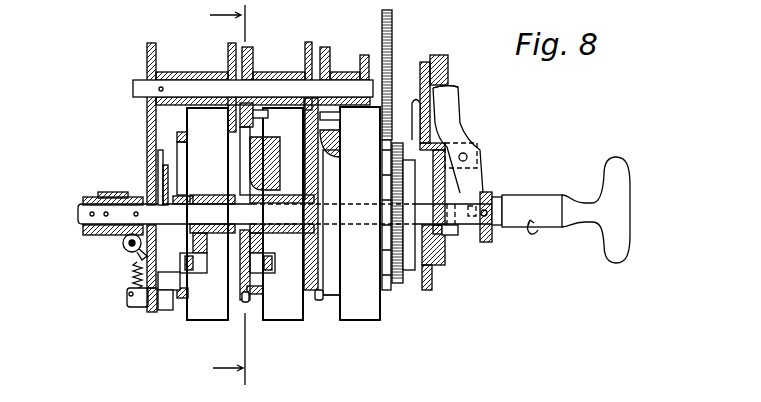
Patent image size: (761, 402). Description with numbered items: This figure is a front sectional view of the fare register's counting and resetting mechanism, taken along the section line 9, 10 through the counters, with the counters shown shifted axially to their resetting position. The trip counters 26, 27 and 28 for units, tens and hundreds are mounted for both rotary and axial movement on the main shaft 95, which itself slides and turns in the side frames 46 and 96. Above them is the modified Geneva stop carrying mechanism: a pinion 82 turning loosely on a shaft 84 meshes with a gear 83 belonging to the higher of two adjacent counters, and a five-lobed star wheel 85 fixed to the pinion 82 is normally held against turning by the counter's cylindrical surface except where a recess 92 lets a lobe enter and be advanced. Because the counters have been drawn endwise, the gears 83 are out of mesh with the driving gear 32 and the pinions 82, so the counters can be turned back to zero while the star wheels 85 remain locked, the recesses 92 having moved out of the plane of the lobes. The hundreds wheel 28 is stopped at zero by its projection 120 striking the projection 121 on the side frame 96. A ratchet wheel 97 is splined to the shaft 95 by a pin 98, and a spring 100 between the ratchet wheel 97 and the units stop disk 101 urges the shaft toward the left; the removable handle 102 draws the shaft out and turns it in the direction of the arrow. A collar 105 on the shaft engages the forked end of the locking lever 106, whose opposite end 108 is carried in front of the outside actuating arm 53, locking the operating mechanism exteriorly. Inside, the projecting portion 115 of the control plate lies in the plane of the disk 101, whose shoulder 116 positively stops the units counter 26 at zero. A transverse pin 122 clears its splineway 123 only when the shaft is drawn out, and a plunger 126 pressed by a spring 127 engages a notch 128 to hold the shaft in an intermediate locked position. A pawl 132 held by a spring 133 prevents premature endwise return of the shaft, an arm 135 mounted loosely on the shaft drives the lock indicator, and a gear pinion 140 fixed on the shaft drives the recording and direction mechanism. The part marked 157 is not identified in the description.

The section line 9 is at (233, 23).
The section line 10 is at (240, 349).
The units counter 26 is at (358, 321).
The tens counter 27 is at (297, 321).
The hundreds wheel 28 is at (206, 321).
The driving gear 32 is at (393, 27).
The side frame 46 is at (437, 272).
The outside actuating arm 53 is at (449, 72).
The pinion 82 is at (232, 45).
The gear 83 is at (246, 303).
The shaft 84 is at (133, 90).
The star wheel 85 is at (250, 48).
The recess 92 is at (268, 132).
The main shaft 95 is at (80, 213).
The side frame 96 is at (147, 55).
The ratchet wheel 97 is at (456, 229).
The pin 98 is at (446, 236).
The spring 100 is at (418, 262).
The units stop disk 101 is at (405, 265).
The handle 102 is at (552, 222).
The collar 105 is at (500, 200).
The locking lever 106 is at (450, 115).
The lever end 108 is at (456, 90).
The projecting portion 115 is at (486, 192).
The projecting shoulder 116 is at (463, 142).
The projection 120 is at (150, 300).
The projection 121 is at (166, 306).
The pin 122 is at (134, 268).
The splineway 123 is at (130, 246).
The plunger 126 is at (162, 192).
The spring 127 is at (157, 182).
The notch 128 is at (176, 203).
The pawl 132 is at (123, 241).
The spring 133 is at (128, 291).
The arm 135 is at (122, 193).
The gear pinion 140 is at (105, 197).
The bearing 157 is at (83, 232).